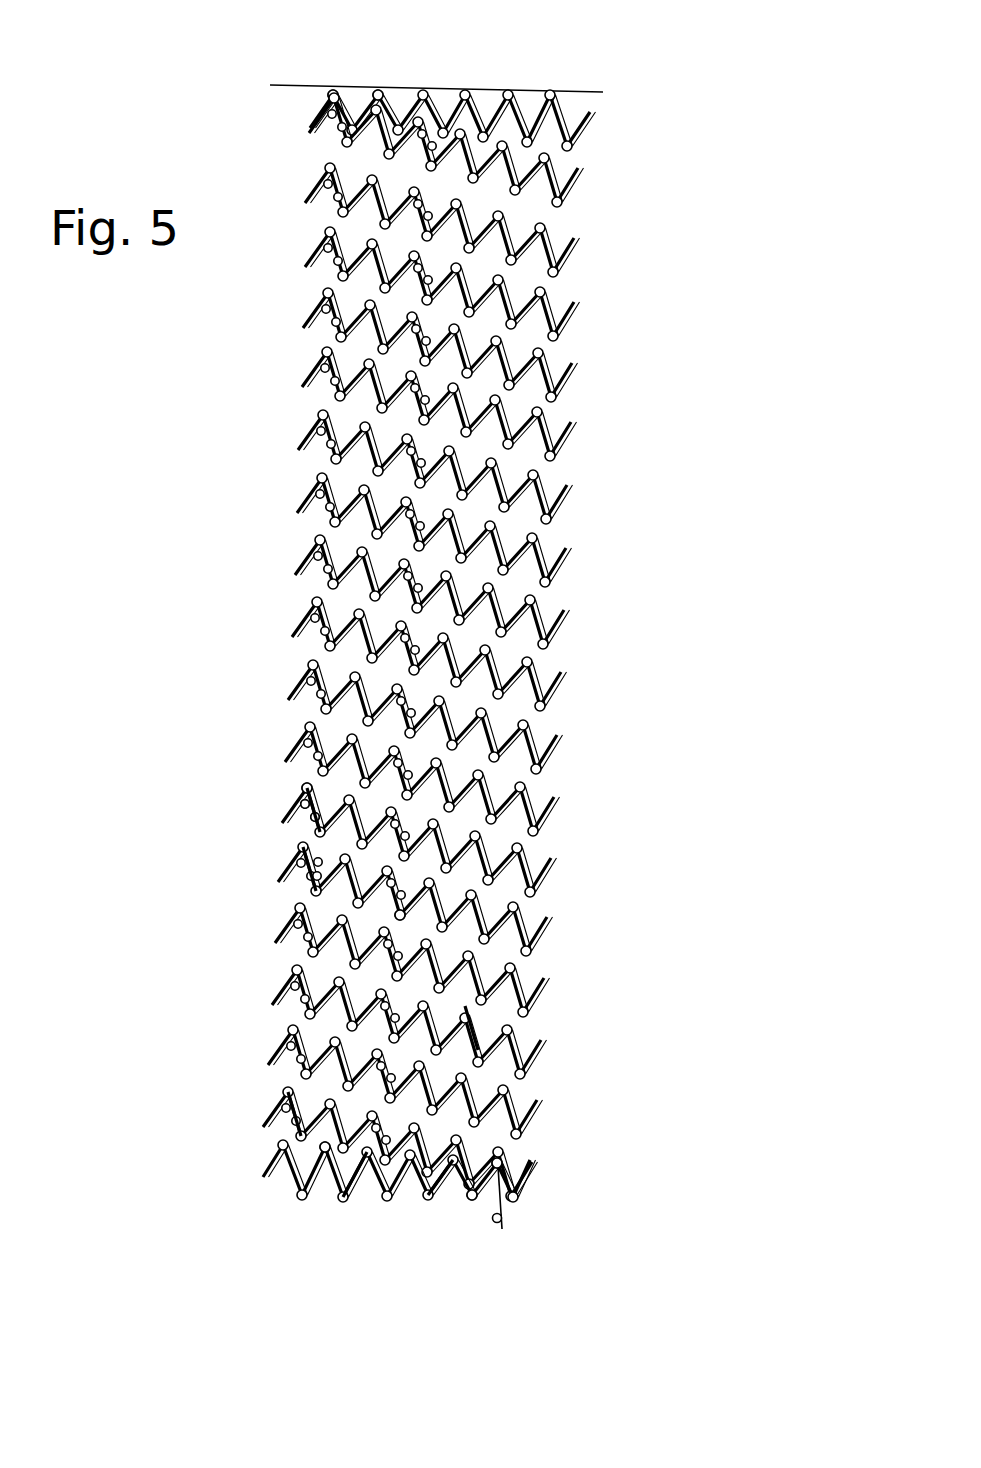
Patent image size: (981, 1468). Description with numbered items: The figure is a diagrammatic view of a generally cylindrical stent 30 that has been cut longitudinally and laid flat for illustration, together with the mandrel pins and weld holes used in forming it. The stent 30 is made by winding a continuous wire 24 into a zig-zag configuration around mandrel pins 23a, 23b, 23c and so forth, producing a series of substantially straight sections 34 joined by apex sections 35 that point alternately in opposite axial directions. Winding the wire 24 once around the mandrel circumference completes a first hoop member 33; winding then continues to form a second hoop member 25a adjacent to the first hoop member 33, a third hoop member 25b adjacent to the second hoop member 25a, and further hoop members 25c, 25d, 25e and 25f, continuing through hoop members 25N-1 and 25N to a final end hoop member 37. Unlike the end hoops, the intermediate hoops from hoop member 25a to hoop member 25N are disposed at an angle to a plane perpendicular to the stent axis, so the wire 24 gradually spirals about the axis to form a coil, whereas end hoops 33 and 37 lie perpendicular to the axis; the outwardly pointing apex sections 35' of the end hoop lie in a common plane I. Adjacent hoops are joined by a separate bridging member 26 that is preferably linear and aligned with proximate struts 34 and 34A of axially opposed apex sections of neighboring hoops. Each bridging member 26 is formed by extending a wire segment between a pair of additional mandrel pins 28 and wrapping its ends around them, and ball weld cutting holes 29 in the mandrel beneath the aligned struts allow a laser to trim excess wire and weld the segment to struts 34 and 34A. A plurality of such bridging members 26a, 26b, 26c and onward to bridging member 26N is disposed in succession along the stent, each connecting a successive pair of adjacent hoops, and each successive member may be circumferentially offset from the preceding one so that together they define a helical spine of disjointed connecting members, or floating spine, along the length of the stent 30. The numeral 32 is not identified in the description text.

The plane I is at (248, 77).
The stent 30 is at (439, 638).
The end hoop member 37 is at (589, 122).
The apex sections 35' is at (364, 53).
The separate bridging member 26N is at (425, 182).
The hoop member 25N is at (592, 201).
The hoop member 25N-1 is at (587, 263).
The rings / spaces between rings 32 is at (252, 598).
The hoop member 25f is at (560, 873).
The hoop member 25e is at (560, 932).
The hoop member 25d is at (557, 995).
The hoop member 25c is at (552, 1054).
The third hoop member 25b is at (260, 1032).
The second hoop member 25a is at (235, 1108).
The first hoop member 33 is at (265, 1170).
The wire 24 is at (505, 1229).
The straight section 34A is at (305, 795).
The pins 28 is at (295, 800).
The ball weld cutting holes 29 is at (308, 815).
The separate bridging member 26 is at (317, 830).
The straight section 34 is at (402, 916).
The separate bridging member 26c is at (305, 897).
The separate bridging member 26b is at (468, 1006).
The separate bridging member 26a is at (300, 1077).
The apex sections 35 is at (271, 1139).
The pin 23a is at (500, 1163).
The pin 23c is at (449, 1172).
The pin 23b is at (465, 1198).